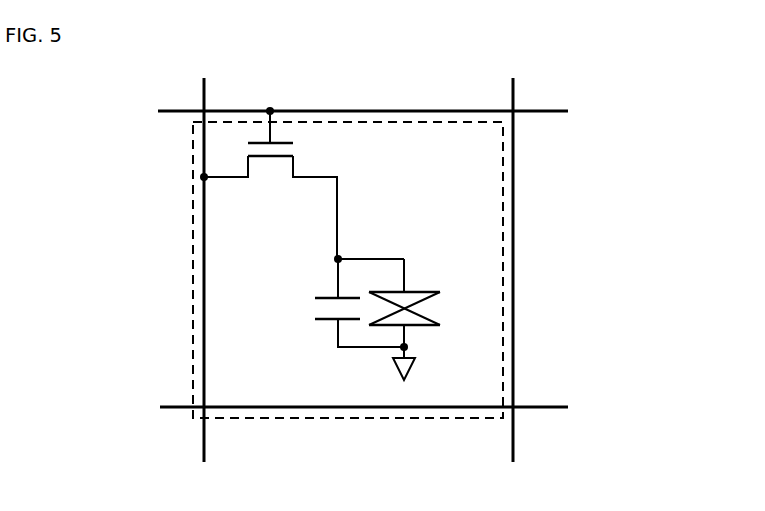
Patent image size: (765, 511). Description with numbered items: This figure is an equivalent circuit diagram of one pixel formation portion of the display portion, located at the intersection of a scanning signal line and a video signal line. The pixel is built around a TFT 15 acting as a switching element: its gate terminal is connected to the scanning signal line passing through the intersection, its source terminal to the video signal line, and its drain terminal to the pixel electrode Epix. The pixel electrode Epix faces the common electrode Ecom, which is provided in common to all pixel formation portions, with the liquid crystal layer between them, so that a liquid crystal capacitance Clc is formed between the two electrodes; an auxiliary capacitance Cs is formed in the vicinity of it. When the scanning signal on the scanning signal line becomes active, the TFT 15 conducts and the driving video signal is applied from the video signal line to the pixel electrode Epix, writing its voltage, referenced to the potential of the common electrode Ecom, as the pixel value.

The TFT 15 is at (293, 148).
The pixel electrode Epix is at (335, 259).
The auxiliary capacitance Cs is at (314, 310).
The liquid crystal capacitance Clc is at (418, 306).
The common electrode Ecom is at (406, 372).